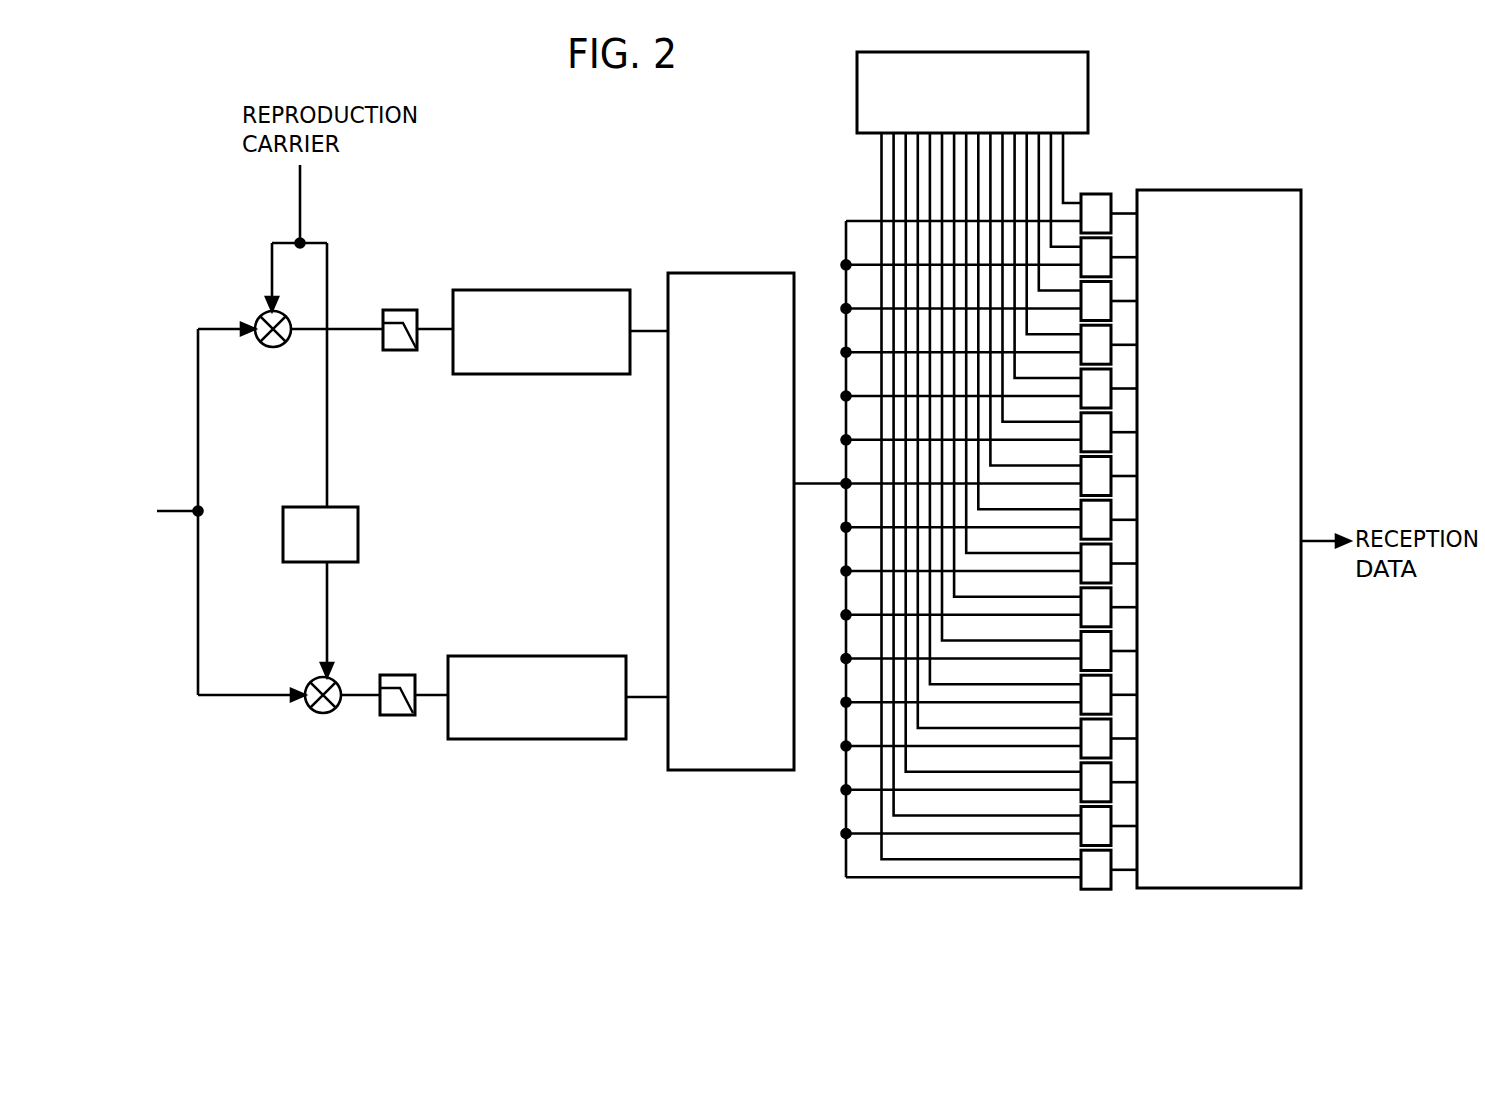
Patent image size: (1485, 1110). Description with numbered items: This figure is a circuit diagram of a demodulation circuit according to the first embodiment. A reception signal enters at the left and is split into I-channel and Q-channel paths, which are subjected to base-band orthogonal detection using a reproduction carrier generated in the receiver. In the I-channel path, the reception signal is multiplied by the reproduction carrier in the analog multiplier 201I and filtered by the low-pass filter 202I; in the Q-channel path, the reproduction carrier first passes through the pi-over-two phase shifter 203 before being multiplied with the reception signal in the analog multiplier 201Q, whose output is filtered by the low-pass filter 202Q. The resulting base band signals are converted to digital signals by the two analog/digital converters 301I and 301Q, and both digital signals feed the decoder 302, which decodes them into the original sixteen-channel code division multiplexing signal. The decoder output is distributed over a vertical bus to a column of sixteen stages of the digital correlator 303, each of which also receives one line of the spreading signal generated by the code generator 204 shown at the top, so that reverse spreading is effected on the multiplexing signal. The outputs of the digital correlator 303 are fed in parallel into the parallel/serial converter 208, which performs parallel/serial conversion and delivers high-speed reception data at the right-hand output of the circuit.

The analog multiplier 201I is at (267, 352).
The low-pass filter 202I is at (396, 352).
The analog/digital converter 301I is at (518, 288).
The analog multiplier 201Q is at (317, 713).
The low-pass filter 202Q is at (393, 718).
The analog/digital converter 301Q is at (515, 653).
The π/2 phase shifter 203 is at (360, 515).
The decoder 302 is at (730, 270).
The code generator 204 is at (1088, 92).
The digital correlator 303 is at (1093, 192).
The parallel/serial converter 208 is at (1221, 189).